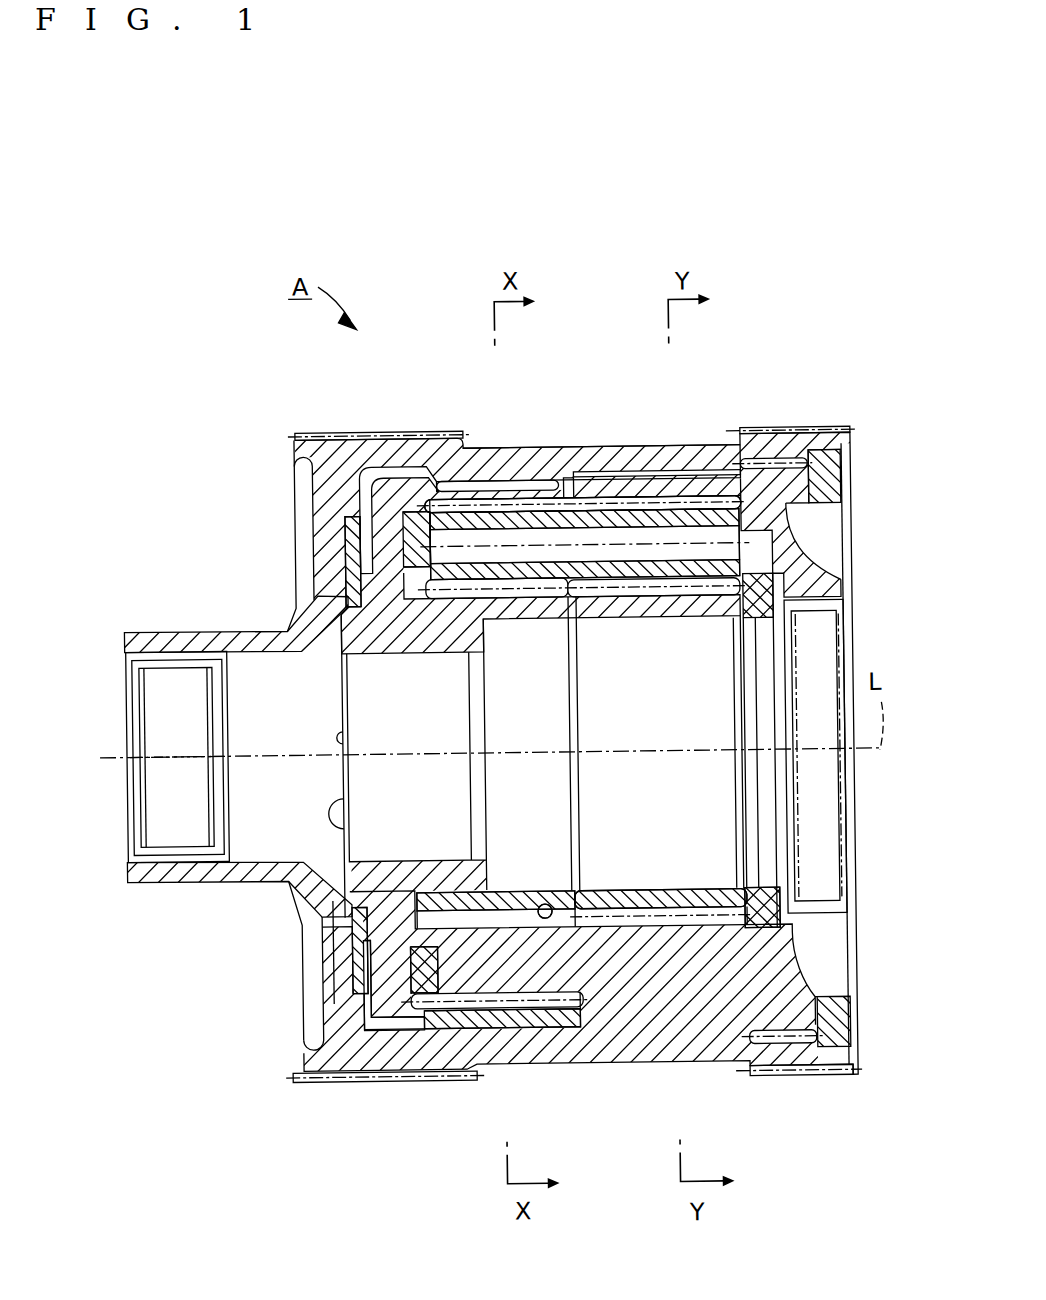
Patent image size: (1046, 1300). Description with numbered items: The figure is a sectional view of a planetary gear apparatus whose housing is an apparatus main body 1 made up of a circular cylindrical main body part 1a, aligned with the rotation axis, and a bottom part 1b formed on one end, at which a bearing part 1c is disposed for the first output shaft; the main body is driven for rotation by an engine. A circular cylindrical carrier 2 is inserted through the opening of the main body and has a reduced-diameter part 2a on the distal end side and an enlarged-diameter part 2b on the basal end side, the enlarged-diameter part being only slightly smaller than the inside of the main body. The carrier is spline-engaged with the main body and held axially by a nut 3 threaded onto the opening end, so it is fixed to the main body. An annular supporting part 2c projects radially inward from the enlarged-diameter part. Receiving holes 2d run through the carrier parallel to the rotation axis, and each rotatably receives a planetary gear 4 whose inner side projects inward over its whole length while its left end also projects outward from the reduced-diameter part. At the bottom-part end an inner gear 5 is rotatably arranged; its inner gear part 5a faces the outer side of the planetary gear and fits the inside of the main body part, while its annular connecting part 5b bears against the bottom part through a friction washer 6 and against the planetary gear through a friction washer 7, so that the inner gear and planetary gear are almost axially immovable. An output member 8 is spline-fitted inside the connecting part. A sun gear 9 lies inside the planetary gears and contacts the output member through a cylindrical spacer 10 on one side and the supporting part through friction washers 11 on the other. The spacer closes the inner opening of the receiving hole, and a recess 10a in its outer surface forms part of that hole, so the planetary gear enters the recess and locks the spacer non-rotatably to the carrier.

The apparatus main body 1 is at (490, 440).
The main body part 1a is at (572, 447).
The bottom part 1b is at (336, 565).
The bearing part 1c is at (143, 624).
The carrier 2 is at (683, 1040).
The reduced-diameter part 2a is at (482, 974).
The enlarged-diameter part 2b is at (617, 1011).
The supporting part 2c is at (829, 592).
The receiving hole 2d is at (692, 504).
The nut 3 is at (831, 484).
The planetary gear 4 is at (641, 520).
The inner gear 5 is at (405, 1044).
The inner gear part 5a is at (530, 1019).
The annular connecting part 5b is at (363, 970).
The friction washer 6 is at (356, 524).
The friction washer 7 is at (417, 510).
The output member 8 is at (363, 922).
The sun gear 9 is at (650, 900).
The spacer 10 is at (514, 905).
The recess 10a is at (544, 906).
The friction washers 11 is at (753, 897).